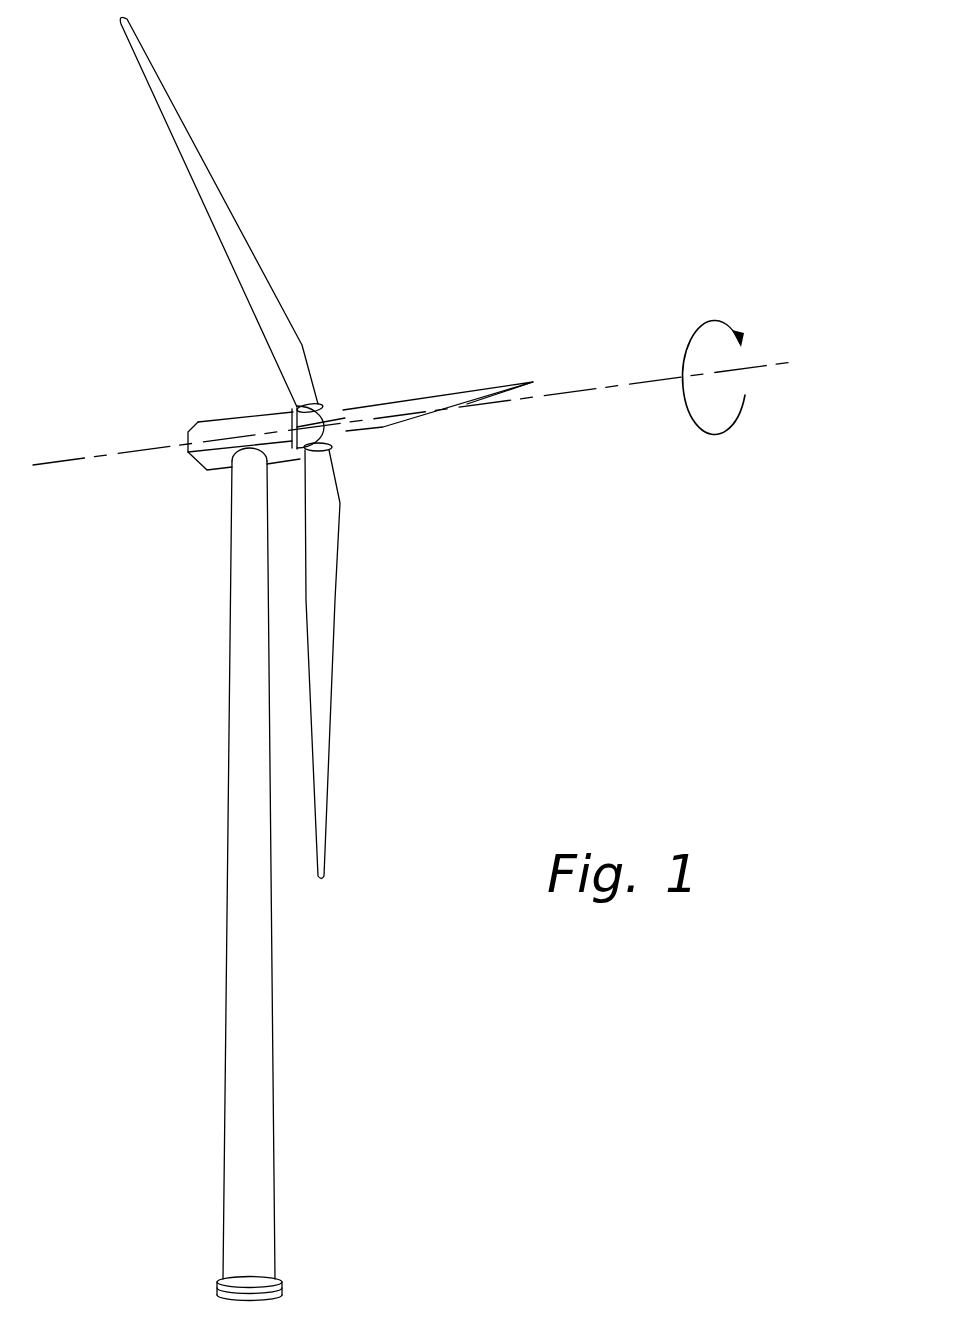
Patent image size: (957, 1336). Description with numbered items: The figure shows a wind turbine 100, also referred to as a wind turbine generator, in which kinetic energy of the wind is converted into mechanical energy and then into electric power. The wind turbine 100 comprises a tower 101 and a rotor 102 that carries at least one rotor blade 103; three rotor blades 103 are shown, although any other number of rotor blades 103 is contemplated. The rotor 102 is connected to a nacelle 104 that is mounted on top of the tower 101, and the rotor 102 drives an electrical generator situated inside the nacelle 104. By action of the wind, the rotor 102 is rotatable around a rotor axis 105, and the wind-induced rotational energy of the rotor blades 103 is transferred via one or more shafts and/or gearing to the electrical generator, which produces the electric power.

The wind turbine 100 is at (598, 120).
The tower 101 is at (278, 1047).
The rotor 102 is at (381, 481).
The rotor blade 103 is at (335, 657).
The nacelle 104 is at (217, 417).
The rotor axis 105 is at (60, 460).